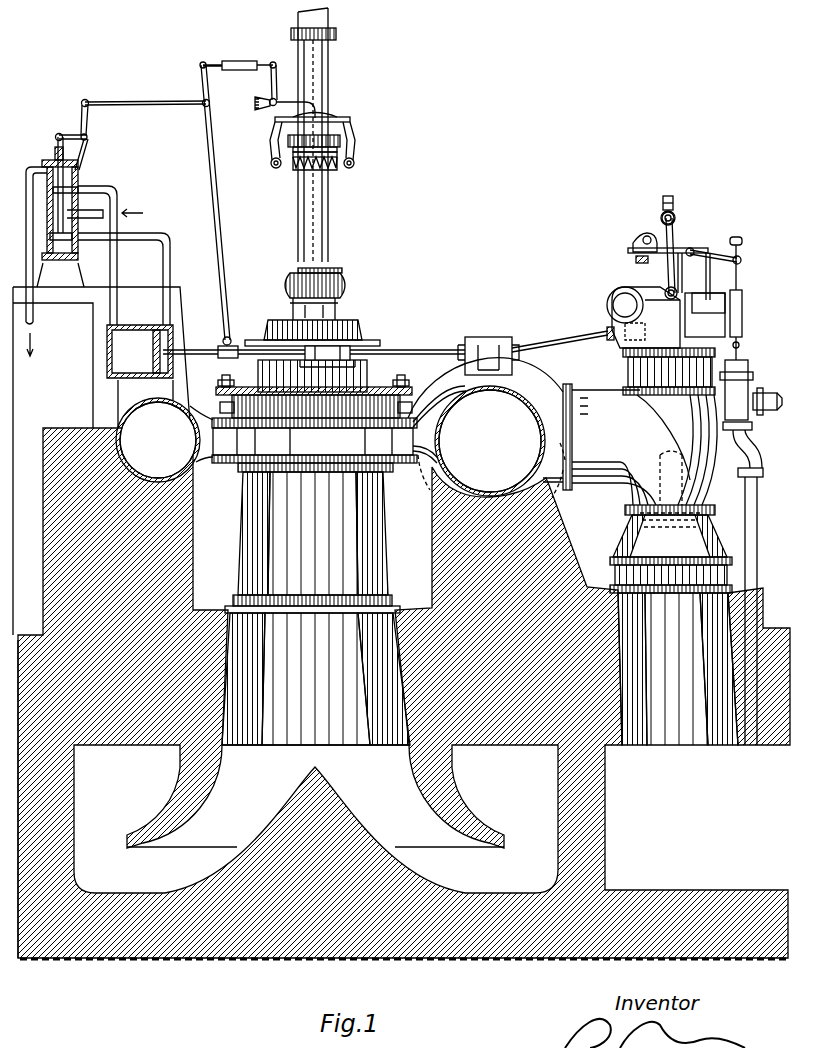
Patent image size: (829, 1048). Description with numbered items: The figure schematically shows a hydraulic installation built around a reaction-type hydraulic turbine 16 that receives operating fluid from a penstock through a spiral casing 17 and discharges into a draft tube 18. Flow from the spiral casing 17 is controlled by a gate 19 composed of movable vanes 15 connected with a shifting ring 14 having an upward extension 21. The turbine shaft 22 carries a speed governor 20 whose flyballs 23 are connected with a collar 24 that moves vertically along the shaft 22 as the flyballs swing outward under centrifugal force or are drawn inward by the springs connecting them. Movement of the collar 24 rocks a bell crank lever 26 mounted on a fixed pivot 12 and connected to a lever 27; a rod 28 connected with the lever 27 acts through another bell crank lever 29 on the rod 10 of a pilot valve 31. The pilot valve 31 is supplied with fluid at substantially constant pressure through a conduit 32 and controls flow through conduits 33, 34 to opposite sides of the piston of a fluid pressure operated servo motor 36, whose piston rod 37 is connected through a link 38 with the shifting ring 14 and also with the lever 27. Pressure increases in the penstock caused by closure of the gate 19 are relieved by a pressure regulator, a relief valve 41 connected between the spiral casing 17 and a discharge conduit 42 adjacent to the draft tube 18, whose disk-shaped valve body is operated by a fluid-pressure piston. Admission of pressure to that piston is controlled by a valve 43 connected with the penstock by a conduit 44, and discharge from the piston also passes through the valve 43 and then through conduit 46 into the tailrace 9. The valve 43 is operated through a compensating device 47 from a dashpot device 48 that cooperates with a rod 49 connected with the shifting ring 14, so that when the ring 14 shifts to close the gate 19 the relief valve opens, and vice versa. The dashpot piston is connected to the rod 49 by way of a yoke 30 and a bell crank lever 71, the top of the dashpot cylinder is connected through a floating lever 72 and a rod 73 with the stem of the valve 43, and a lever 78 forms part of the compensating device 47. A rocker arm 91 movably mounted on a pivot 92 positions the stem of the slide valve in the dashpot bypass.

The tailrace 9 is at (401, 623).
The pilot valve rod 10 is at (56, 152).
The fixed pivot 12 is at (260, 110).
The shifting ring 14 is at (225, 385).
The movable vanes 15 is at (430, 438).
The hydraulic turbine 16 is at (246, 482).
The spiral casing 17 is at (447, 395).
The draft tube 18 is at (293, 167).
The gate 19 is at (343, 447).
The speed governor 20 is at (392, 133).
The upward extension 21 is at (367, 366).
The shaft 22 is at (329, 212).
The flyballs 23 is at (271, 158).
The collar 24 is at (342, 116).
The bell crank lever 26 is at (271, 80).
The lever 27 is at (222, 212).
The rod 28 is at (153, 102).
The bell crank lever 29 is at (80, 116).
The yoke 30 is at (675, 216).
The pilot valve 31 is at (101, 257).
The conduit 32 is at (90, 209).
The conduit 33 is at (117, 263).
The conduit 34 is at (170, 256).
The servo motor 36 is at (140, 324).
The piston rod 37 is at (200, 349).
The link 38 is at (245, 360).
The relief valve 41 is at (645, 436).
The discharge conduit 42 is at (676, 745).
The valve 43 is at (750, 412).
The conduit 44 is at (768, 395).
The conduit 46 is at (758, 530).
The compensating device 47 is at (732, 283).
The dashpot device 48 is at (702, 283).
The rod 49 is at (560, 342).
The bell crank lever 71 is at (628, 287).
The floating lever 72 is at (718, 250).
The rod 73 is at (740, 280).
The lever 78 is at (712, 300).
The rocker arm 91 is at (647, 236).
The pivot 92 is at (663, 210).